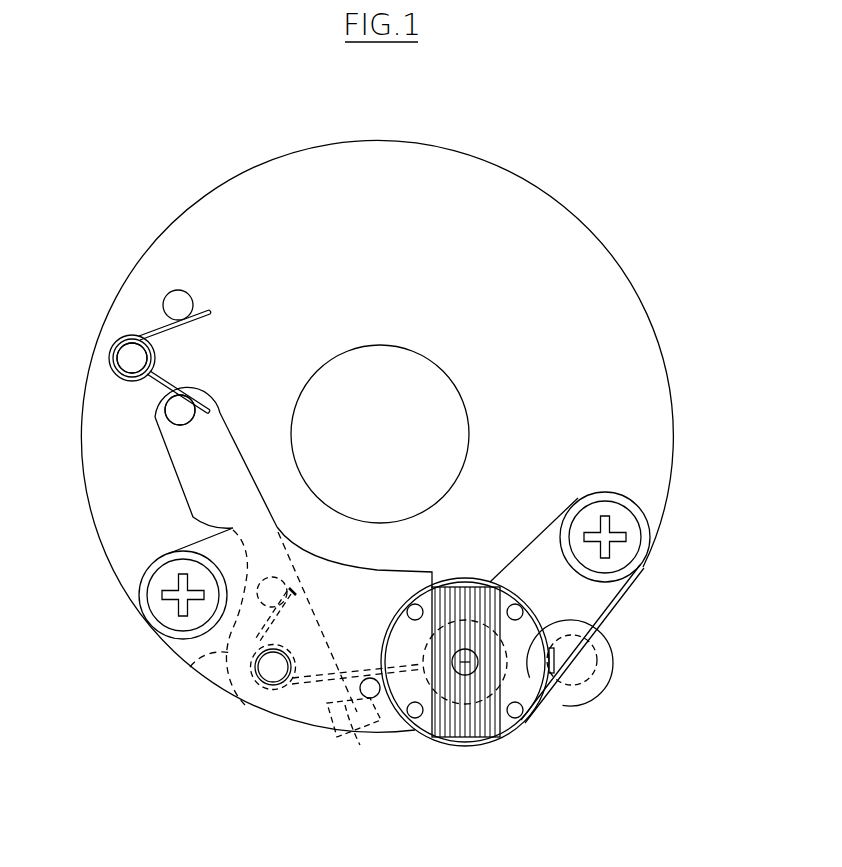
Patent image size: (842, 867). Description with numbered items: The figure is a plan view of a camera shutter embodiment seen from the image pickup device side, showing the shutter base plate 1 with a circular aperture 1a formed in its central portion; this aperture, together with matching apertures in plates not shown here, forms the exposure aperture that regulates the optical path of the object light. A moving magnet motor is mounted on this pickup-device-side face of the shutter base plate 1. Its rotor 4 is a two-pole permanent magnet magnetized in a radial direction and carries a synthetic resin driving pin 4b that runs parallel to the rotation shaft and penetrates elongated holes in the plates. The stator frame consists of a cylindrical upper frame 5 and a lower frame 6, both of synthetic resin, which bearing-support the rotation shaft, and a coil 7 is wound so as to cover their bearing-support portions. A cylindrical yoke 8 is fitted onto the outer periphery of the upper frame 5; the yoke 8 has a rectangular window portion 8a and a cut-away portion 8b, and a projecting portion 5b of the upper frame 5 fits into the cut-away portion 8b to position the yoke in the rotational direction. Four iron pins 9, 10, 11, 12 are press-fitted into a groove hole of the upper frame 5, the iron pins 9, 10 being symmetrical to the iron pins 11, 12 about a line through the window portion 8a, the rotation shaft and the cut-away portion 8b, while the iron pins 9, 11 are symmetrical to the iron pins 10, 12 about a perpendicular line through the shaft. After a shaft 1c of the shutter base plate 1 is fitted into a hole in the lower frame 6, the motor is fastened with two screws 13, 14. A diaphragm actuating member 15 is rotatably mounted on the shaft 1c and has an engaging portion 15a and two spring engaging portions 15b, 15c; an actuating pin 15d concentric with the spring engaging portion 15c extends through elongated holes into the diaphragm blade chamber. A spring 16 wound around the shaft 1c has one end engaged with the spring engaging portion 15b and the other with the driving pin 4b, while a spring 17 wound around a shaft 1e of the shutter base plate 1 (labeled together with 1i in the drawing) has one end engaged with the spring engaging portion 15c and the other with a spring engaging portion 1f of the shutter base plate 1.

The shutter base plate 1 is at (610, 318).
The circular aperture 1a is at (452, 466).
The shaft 1c is at (268, 674).
The shaft 1e is at (135, 358).
The spring support post 1i is at (132, 358).
The spring engaging portion 1f is at (178, 300).
The rotor 4 is at (555, 700).
The driving pin 4b is at (328, 718).
The upper frame 5 is at (582, 620).
The projecting portion 5b is at (565, 663).
The lower frame 6 is at (558, 530).
The coil 7 is at (478, 583).
The cylindrical yoke 8 is at (462, 582).
The rectangular window portion 8a is at (380, 660).
The cut-away portion 8b is at (592, 680).
The iron pin 9 is at (410, 607).
The iron pin 10 is at (537, 562).
The iron pin 11 is at (402, 725).
The iron pin 12 is at (515, 722).
The screw 13 is at (167, 613).
The screw 14 is at (627, 553).
The diaphragm actuating member 15 is at (200, 665).
The engaging portion 15a is at (362, 728).
The spring engaging portion 15b is at (318, 565).
The spring engaging portion 15c is at (168, 420).
The actuating pin 15d is at (180, 410).
The spring 16 is at (310, 687).
The spring 17 is at (152, 327).